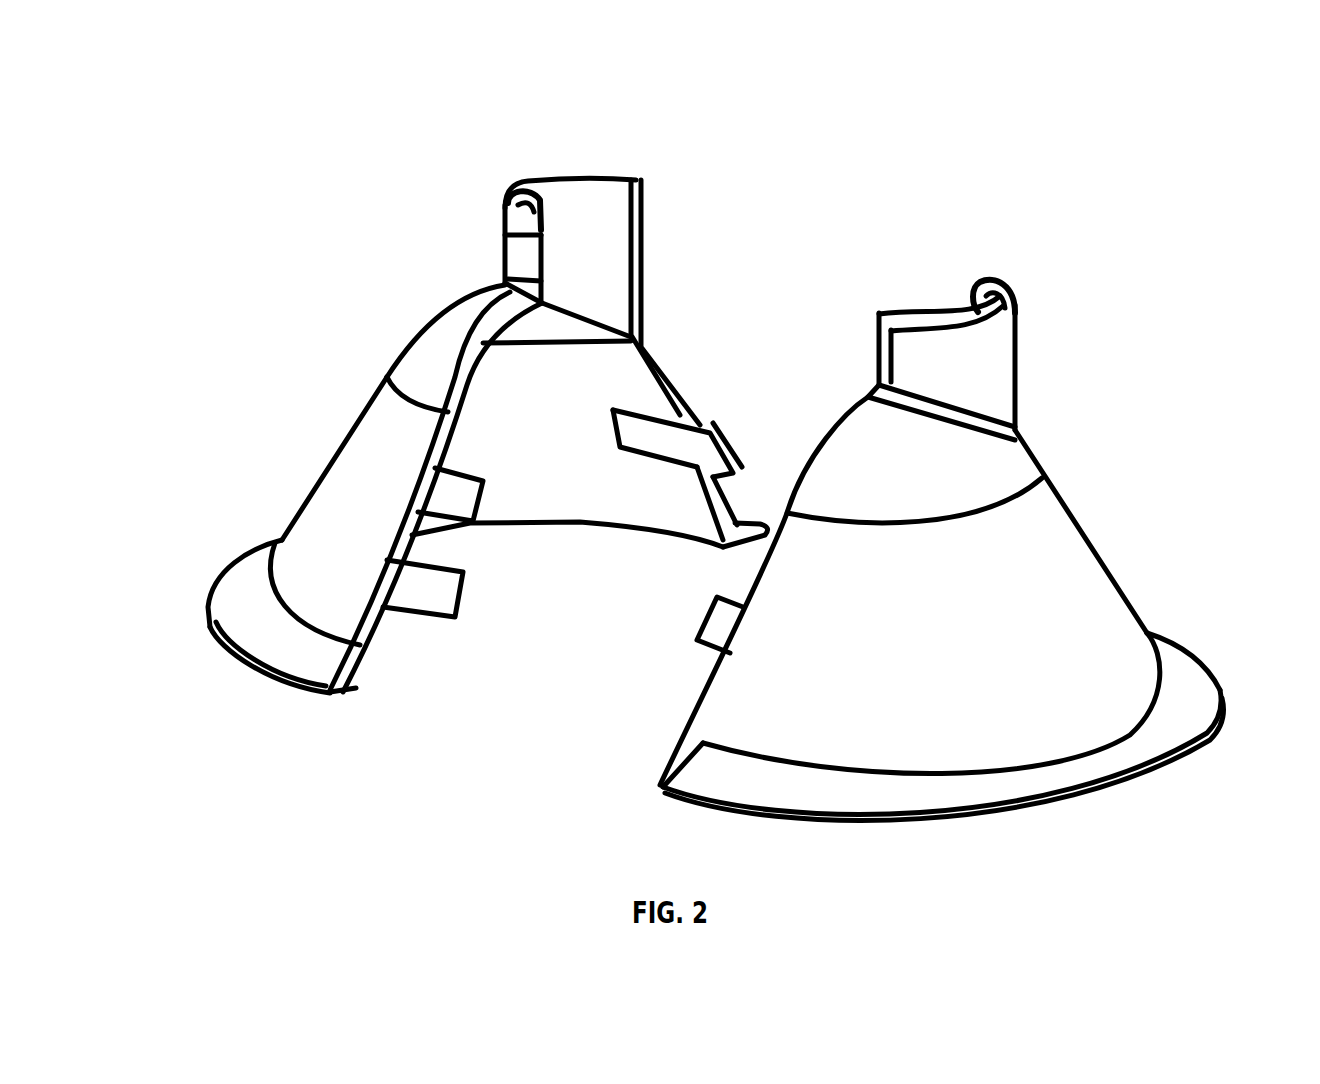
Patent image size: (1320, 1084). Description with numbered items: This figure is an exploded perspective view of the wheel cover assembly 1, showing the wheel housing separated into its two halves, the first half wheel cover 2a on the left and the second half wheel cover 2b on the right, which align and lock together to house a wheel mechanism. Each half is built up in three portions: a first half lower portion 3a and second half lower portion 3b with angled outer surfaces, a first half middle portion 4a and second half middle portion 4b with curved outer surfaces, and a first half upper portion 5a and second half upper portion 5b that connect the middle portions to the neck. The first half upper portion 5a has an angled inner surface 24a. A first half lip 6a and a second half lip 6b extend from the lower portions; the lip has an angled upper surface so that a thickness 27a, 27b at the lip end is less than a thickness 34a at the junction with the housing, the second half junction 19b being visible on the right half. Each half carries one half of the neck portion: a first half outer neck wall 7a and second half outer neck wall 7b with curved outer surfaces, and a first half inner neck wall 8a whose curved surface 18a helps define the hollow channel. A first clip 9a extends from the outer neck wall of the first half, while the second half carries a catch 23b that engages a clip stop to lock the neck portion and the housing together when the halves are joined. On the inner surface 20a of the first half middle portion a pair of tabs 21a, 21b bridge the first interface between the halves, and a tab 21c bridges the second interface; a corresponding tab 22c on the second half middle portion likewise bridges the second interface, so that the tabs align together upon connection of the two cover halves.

The wheel cover assembly 1 is at (903, 162).
The first half wheel cover 2a is at (365, 308).
The second half wheel cover 2b is at (1045, 365).
The first half lower portion 3a is at (333, 490).
The second half lower portion 3b is at (1065, 578).
The first half middle portion 4a is at (437, 335).
The second half middle portion 4b is at (1020, 474).
The first half upper portion 5a is at (503, 287).
The second half upper portion 5b is at (1014, 428).
The first half lip 6a is at (242, 583).
The second half lip 6b is at (1193, 672).
The first half outer neck wall 7a is at (508, 222).
The second half outer neck wall 7b is at (993, 353).
The first half inner neck wall 8a is at (592, 202).
The first clip 9a is at (523, 258).
The curved surface 18a is at (613, 263).
The second half junction 19b is at (1050, 753).
The inner surface 20a is at (567, 451).
The tab 21a is at (457, 503).
The tab 21b is at (426, 597).
The tab 21c is at (727, 627).
The tab 22c is at (690, 447).
The catch 23b is at (877, 352).
The angled inner surface 24a is at (565, 336).
The thickness 27a is at (325, 700).
The thickness 27b is at (813, 820).
The thickness 34a is at (349, 674).